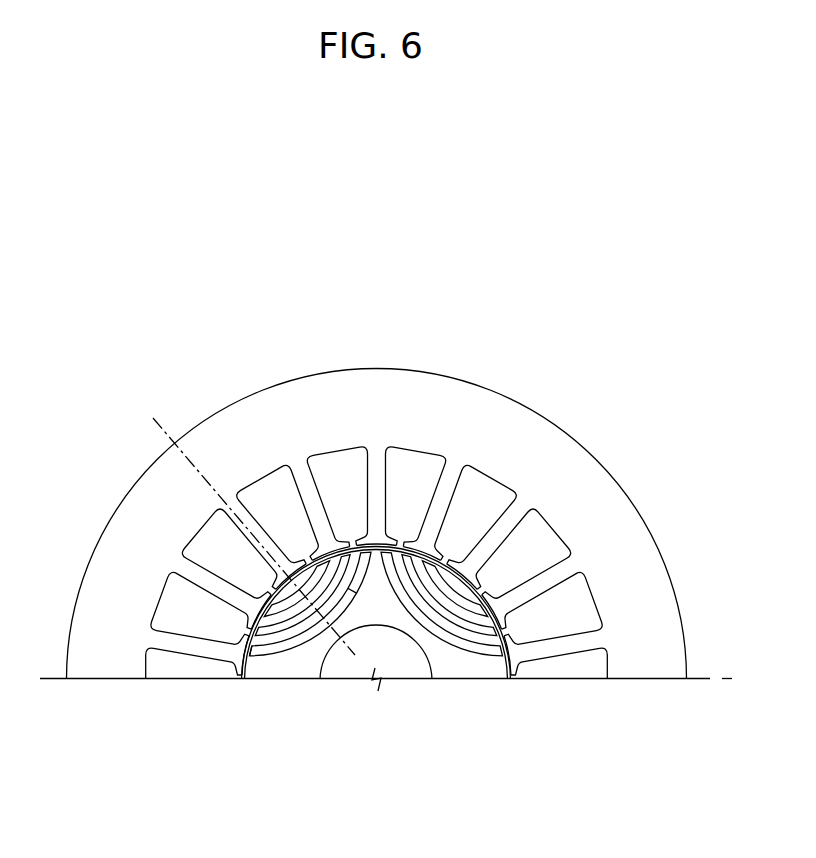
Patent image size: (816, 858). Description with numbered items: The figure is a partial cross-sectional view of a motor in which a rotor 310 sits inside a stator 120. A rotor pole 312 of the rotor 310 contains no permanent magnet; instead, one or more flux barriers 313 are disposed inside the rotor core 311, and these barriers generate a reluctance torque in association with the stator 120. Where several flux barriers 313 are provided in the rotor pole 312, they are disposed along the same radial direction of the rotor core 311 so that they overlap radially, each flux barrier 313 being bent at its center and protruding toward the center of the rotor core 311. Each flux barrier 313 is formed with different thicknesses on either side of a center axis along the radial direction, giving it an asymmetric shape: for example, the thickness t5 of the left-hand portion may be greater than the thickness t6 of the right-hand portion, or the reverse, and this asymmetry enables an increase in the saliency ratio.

The stator 120 is at (418, 376).
The rotor 310 is at (483, 681).
The rotor core 311 is at (292, 670).
The rotor pole 312 is at (323, 644).
The flux barrier 313 is at (365, 638).
The thickness of the left-hand portion of the flux barrier t5 is at (265, 620).
The thickness of the right-hand portion of the flux barrier t6 is at (323, 574).